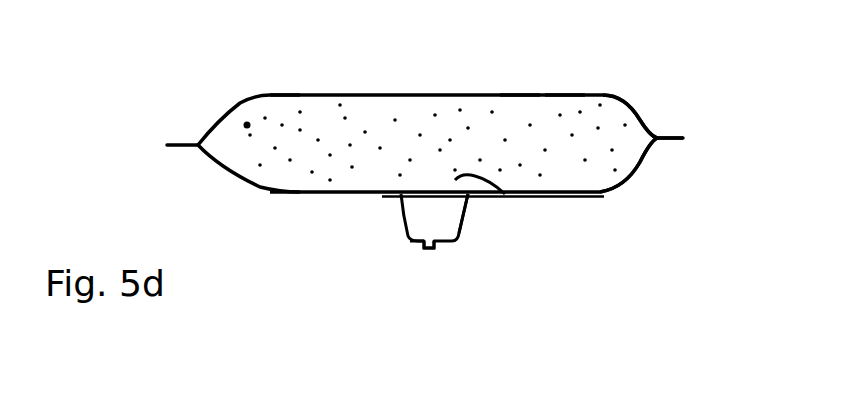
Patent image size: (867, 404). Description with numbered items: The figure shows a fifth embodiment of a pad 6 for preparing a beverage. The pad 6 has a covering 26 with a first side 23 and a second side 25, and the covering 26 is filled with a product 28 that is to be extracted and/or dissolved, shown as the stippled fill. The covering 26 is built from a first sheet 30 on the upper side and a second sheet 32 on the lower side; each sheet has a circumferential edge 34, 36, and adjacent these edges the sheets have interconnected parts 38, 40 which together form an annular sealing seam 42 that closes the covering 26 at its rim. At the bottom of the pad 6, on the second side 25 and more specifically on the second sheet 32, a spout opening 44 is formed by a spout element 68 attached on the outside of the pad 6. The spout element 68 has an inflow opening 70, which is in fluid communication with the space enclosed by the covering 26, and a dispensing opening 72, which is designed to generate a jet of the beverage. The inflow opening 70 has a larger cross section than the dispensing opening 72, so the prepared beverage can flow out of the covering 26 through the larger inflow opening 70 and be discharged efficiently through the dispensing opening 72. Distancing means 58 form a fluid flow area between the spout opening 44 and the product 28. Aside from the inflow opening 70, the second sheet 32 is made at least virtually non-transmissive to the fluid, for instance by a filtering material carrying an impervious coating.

The pad 6 is at (758, 261).
The product 28 is at (247, 125).
The first side 23 is at (285, 85).
The second side 25 is at (284, 205).
The covering 26 is at (523, 93).
The first sheet 30 is at (563, 93).
The second sheet 32 is at (543, 197).
The circumferential edge 34 is at (662, 140).
The circumferential edge 36 is at (662, 140).
The interconnected part 38 is at (670, 140).
The interconnected part 40 is at (670, 140).
The annular sealing seam 42 is at (683, 140).
The distancing means 58 is at (370, 236).
The spout opening 44 is at (405, 256).
The dispensing opening 72 is at (427, 249).
The spout element 68 is at (461, 222).
The inflow opening 70 is at (505, 194).